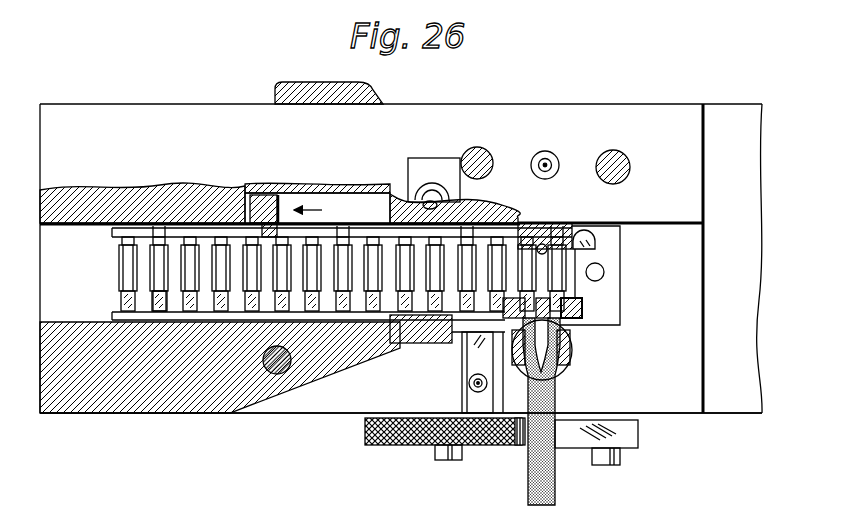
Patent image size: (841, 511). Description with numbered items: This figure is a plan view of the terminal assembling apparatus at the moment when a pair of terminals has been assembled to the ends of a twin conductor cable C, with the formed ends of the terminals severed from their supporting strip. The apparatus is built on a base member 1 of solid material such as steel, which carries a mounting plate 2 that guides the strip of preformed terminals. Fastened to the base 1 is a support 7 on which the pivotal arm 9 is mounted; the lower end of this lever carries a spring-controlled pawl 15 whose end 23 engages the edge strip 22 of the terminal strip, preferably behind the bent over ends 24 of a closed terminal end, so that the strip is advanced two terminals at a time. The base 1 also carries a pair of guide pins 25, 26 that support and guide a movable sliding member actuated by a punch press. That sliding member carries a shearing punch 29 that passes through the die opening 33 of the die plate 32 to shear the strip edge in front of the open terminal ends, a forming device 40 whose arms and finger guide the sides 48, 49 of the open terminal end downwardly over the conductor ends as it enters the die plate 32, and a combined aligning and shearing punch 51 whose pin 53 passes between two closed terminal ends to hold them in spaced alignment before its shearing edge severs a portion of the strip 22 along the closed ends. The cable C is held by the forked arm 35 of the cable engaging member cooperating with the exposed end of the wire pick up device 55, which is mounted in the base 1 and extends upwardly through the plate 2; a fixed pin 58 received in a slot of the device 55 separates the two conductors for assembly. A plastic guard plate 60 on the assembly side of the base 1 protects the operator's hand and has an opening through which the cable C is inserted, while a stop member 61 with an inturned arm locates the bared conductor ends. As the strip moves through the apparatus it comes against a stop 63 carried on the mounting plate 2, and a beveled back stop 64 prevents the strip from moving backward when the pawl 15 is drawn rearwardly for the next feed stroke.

The base member 1 is at (724, 419).
The mounting plate 2 is at (703, 318).
The support 7 is at (313, 82).
The pivotal arm 9 is at (266, 195).
The pawl 15 is at (296, 193).
The edge strip 22 is at (112, 232).
The end of the pawl 23 is at (349, 186).
The bent over ends 24 is at (162, 262).
The guide pin 25 is at (490, 150).
The guide pin 26 is at (613, 150).
The shearing punch 29 is at (432, 345).
The die plate 32 is at (625, 298).
The die opening 33 is at (395, 345).
The forked arm 35 is at (468, 383).
The forming device 40 is at (586, 311).
The side of the open end of the terminal 48 is at (153, 300).
The side of the open end of the terminal 49 is at (180, 300).
The combined aligning and shearing punch 51 is at (562, 226).
The pin 53 is at (548, 222).
The wire pick up device 55 is at (575, 352).
The fixed pin 58 is at (583, 306).
The guard plate 60 is at (410, 446).
The stop member 61 is at (474, 343).
The stop 63 is at (598, 238).
The back stop 64 is at (540, 246).
The cable C is at (556, 490).